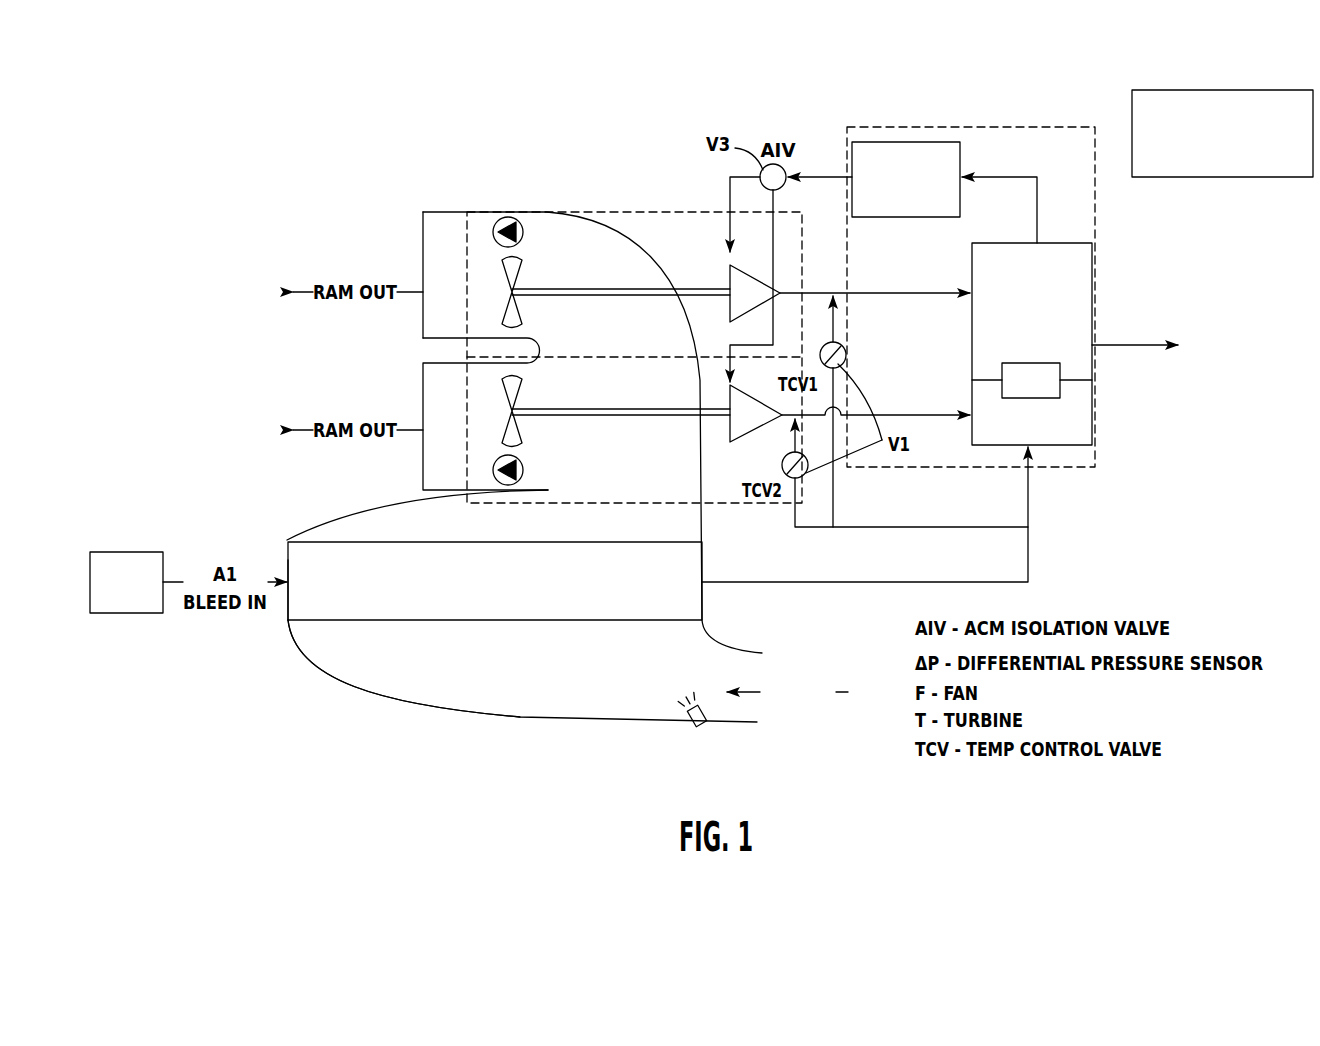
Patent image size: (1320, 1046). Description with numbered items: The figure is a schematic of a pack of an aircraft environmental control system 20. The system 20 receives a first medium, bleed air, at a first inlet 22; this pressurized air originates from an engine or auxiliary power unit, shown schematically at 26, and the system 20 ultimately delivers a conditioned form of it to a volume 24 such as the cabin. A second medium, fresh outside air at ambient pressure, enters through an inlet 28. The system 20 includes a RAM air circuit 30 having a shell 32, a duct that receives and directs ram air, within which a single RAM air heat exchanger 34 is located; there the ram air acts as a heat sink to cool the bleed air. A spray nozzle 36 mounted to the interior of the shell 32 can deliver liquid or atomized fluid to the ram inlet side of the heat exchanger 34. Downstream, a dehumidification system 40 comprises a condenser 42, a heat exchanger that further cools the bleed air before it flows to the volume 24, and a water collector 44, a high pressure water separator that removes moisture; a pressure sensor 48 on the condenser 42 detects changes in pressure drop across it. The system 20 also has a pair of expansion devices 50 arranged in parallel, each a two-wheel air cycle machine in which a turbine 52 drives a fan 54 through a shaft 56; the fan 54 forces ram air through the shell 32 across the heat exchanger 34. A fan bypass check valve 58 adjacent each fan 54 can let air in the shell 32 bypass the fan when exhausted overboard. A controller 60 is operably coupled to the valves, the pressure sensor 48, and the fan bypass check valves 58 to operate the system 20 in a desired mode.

The environmental control system 20 is at (373, 138).
The first inlet 22 is at (287, 607).
The volume 24 is at (1183, 360).
The engine or auxiliary power unit 26 is at (114, 597).
The inlet 28 is at (760, 708).
The RAM air circuit 30 is at (326, 683).
The shell 32 is at (366, 690).
The RAM air heat exchanger 34 is at (435, 610).
The spray nozzle 36 is at (683, 787).
The dehumidification system 40 is at (1000, 124).
The condenser 42 is at (1080, 283).
The water collector 44 is at (912, 142).
The pressure sensor 48 is at (1047, 398).
The expansion device 50 is at (612, 208).
The turbine 52 is at (730, 278).
The fan 54 is at (508, 265).
The shaft 56 is at (588, 289).
The fan bypass check valve 58 is at (508, 217).
The controller 60 is at (1237, 167).